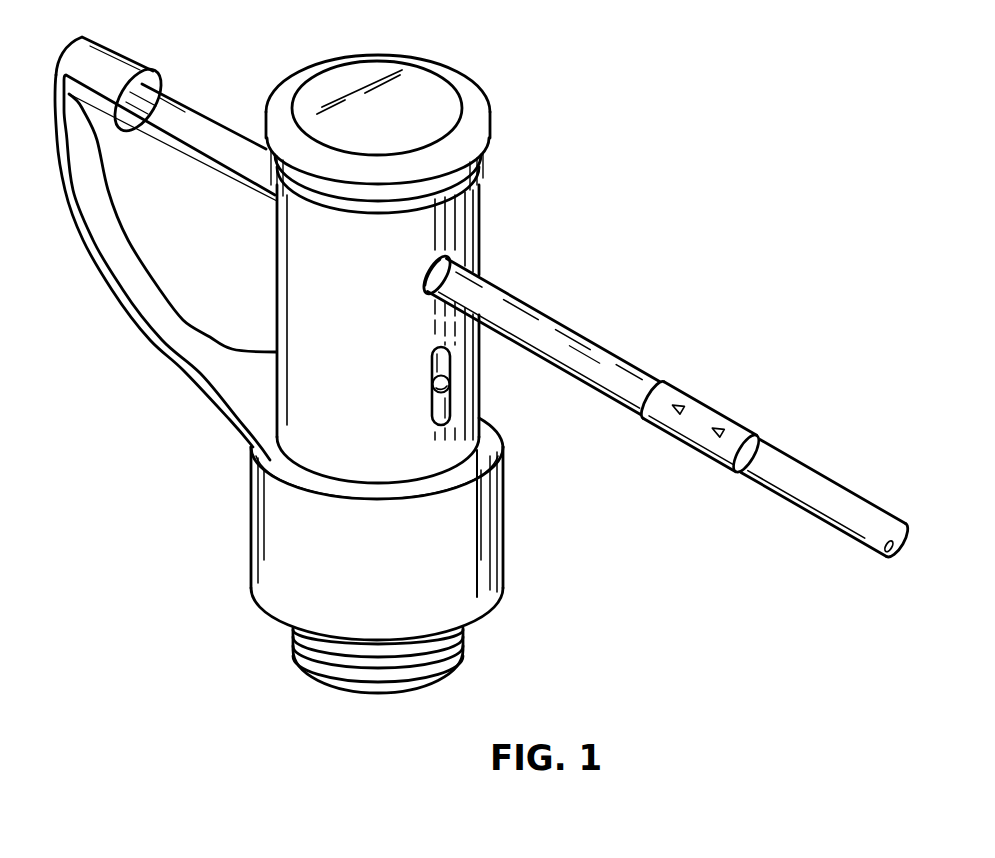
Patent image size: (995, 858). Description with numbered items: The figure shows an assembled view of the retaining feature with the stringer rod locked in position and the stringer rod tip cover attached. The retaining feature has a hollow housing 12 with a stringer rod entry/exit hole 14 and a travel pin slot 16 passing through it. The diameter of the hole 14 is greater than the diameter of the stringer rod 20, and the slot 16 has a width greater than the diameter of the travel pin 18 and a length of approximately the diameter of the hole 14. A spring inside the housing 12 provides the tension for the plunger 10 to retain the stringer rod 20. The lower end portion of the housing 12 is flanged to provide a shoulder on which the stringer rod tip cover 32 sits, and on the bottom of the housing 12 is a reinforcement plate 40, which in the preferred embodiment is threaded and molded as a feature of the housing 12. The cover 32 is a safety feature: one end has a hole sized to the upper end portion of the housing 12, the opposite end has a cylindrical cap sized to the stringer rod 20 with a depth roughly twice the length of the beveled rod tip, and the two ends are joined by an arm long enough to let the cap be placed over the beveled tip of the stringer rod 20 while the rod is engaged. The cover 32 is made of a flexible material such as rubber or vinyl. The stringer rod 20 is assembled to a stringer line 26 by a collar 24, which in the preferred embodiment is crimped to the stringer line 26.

The plunger 10 is at (490, 110).
The hollow housing 12 is at (480, 233).
The stringer rod entry/exit hole 14 is at (426, 270).
The travel pin slot 16 is at (432, 404).
The travel pin 18 is at (433, 386).
The stringer rod 20 is at (577, 332).
The collar 24 is at (710, 406).
The stringer line 26 is at (795, 502).
The stringer rod tip cover 32 is at (130, 62).
The reinforcement plate 40 is at (294, 653).